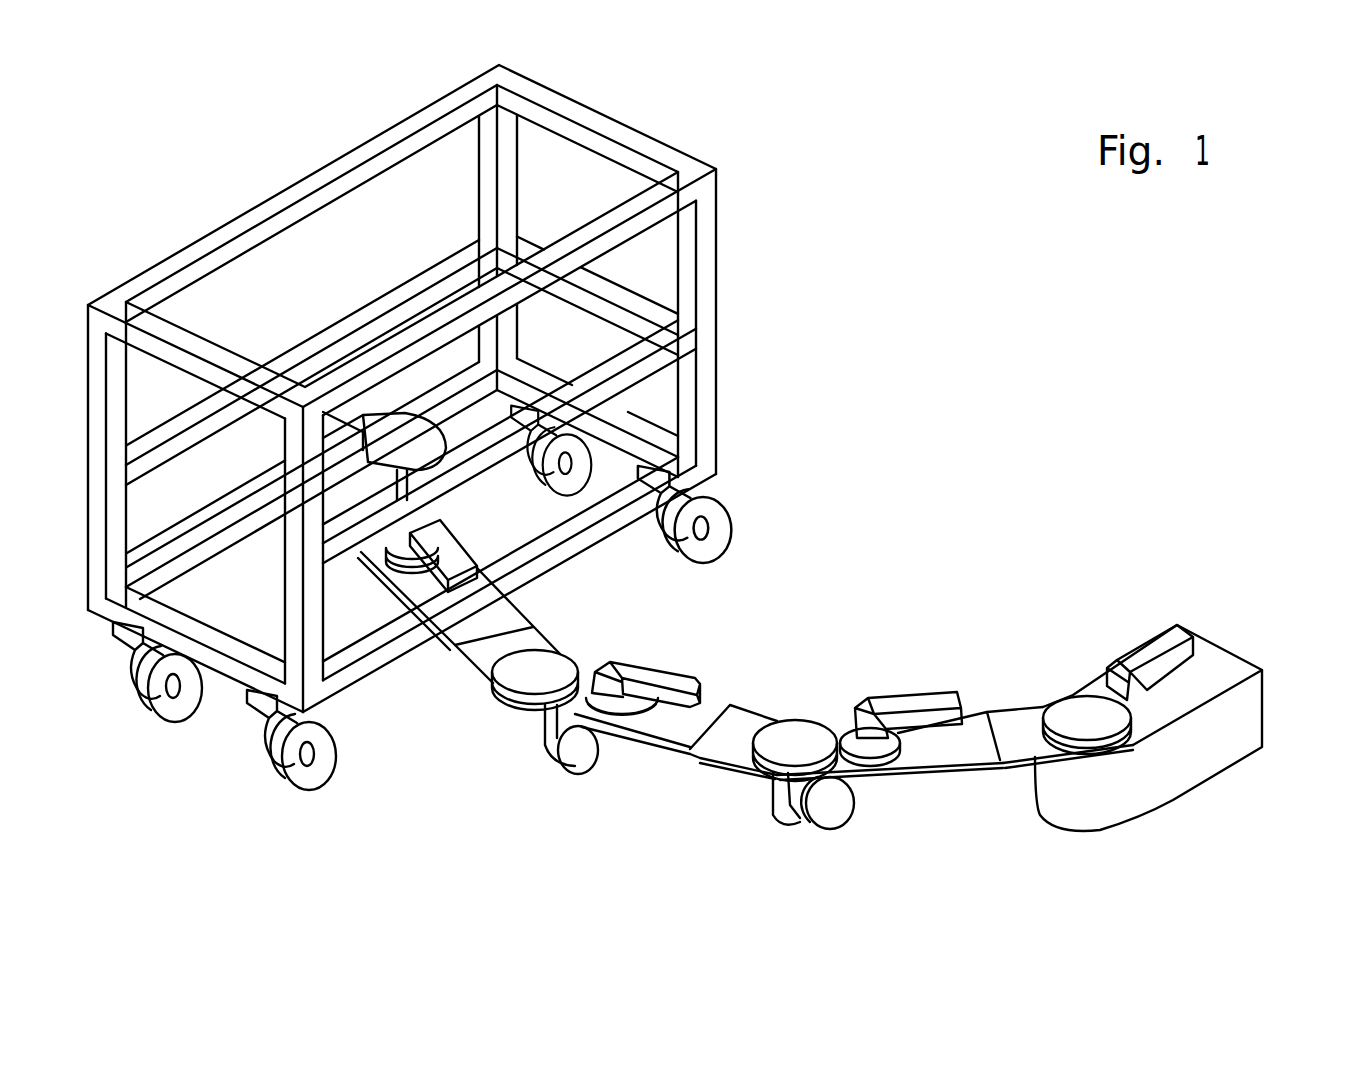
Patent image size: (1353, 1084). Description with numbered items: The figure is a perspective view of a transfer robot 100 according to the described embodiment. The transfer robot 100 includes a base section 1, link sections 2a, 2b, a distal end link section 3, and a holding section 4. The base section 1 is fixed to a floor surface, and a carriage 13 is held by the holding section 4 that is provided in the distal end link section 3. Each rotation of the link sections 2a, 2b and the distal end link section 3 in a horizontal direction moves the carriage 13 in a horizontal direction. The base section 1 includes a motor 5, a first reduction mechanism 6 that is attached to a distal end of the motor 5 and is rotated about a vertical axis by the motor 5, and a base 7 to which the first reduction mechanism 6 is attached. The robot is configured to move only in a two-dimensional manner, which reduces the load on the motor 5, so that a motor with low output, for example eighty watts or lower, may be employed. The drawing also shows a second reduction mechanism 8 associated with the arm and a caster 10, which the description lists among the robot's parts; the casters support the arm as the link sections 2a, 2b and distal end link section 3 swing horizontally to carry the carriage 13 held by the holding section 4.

The transfer robot 100 is at (703, 501).
The carriage 13 is at (690, 158).
The holding section 4 is at (392, 469).
The base section 1 is at (838, 729).
The distal end link section 3 is at (400, 633).
The link section 2b is at (625, 752).
The second reduction mechanism 8 is at (783, 752).
The caster 10 is at (825, 832).
The link section 2a is at (875, 798).
The first reduction mechanism 6 is at (890, 760).
The motor 5 is at (930, 708).
The base 7 is at (1247, 717).